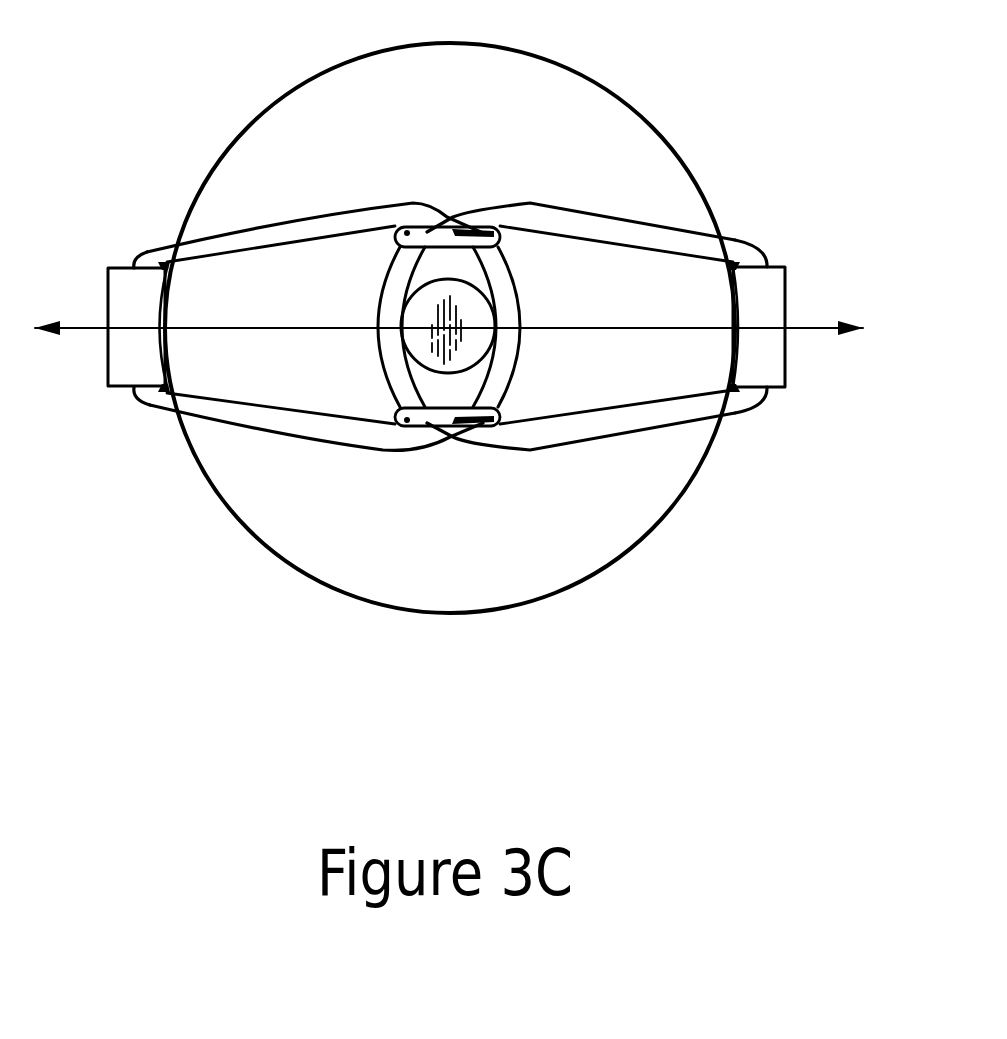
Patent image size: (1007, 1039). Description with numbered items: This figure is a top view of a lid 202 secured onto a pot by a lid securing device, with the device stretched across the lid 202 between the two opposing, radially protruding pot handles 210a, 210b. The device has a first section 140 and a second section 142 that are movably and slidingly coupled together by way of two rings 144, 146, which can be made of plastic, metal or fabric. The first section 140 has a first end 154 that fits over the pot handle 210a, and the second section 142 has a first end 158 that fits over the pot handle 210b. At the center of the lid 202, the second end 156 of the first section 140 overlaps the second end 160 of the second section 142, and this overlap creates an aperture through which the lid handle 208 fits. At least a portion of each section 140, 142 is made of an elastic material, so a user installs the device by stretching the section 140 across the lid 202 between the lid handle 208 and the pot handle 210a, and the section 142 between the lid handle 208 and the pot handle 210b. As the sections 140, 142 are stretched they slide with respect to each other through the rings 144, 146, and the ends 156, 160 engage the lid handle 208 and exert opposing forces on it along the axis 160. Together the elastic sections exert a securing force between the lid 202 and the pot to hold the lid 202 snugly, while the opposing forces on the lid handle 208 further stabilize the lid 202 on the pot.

The first section 140 is at (347, 203).
The second section 142 is at (572, 447).
The ring 144 is at (443, 240).
The ring 146 is at (444, 418).
The first end of the first section 154 is at (145, 243).
The second end of the first section 156 is at (512, 367).
The first end of the second section 158 is at (747, 240).
The second end of the second section 160 is at (387, 287).
The lid 202 is at (657, 127).
The lid handle 208 is at (462, 298).
The pot handle 210a is at (105, 367).
The pot handle 210b is at (788, 355).